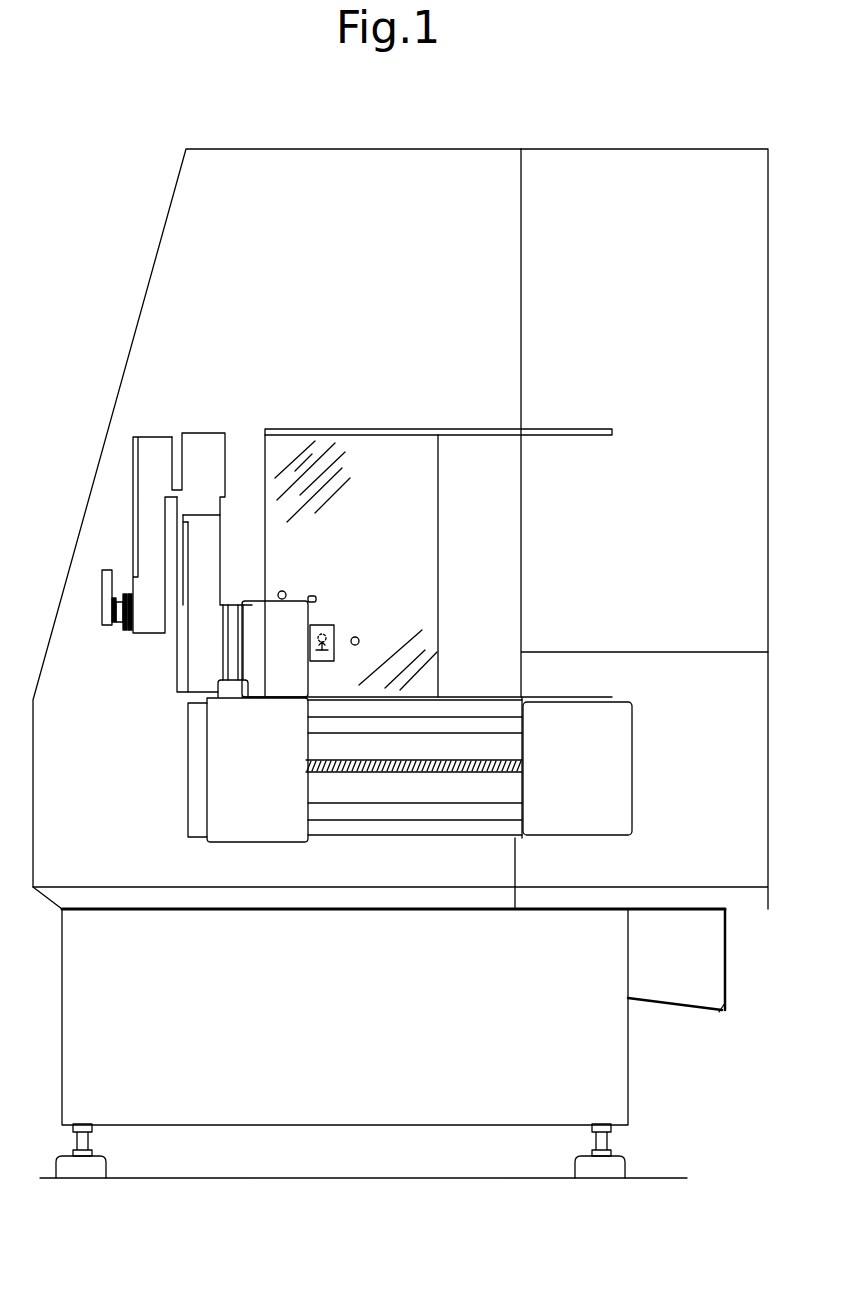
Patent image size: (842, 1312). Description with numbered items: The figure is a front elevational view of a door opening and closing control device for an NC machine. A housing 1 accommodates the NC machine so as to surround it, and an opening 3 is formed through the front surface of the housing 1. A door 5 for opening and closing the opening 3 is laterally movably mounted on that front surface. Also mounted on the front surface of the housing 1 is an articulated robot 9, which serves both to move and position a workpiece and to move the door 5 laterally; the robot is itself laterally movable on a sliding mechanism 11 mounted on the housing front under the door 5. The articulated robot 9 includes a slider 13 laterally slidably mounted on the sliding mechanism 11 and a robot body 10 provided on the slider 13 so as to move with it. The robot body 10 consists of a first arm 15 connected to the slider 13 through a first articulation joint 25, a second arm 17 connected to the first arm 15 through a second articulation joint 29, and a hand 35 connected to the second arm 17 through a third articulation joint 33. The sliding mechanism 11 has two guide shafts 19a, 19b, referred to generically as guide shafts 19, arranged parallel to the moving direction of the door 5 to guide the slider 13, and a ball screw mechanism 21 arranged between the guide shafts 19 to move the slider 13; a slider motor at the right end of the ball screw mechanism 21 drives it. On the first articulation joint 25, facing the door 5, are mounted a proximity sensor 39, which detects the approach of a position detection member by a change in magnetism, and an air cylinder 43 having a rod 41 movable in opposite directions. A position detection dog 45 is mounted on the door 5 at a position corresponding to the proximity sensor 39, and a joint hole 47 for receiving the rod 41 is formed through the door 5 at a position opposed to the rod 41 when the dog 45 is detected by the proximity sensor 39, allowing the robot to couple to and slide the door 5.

The housing 1 is at (332, 170).
The opening 3 is at (343, 436).
The door 5 is at (369, 478).
The articulated robot 9 is at (135, 702).
The robot body 10 is at (250, 394).
The sliding mechanism 11 is at (540, 848).
The slider 13 is at (247, 798).
The first arm 15 is at (205, 572).
The second arm 17 is at (150, 527).
The guide shafts 19 is at (415, 845).
The guide shaft 19a is at (500, 728).
The guide shaft 19b is at (452, 813).
The ball screw mechanism 21 is at (330, 772).
The first articulation joint 25 is at (215, 653).
The second articulation joint 29 is at (158, 472).
The third articulation joint 33 is at (145, 608).
The hand 35 is at (107, 585).
The proximity sensor 39 is at (287, 591).
The rod 41 is at (325, 661).
The air cylinder 43 is at (332, 625).
The position detection dog 45 is at (315, 596).
The joint hole 47 is at (359, 640).